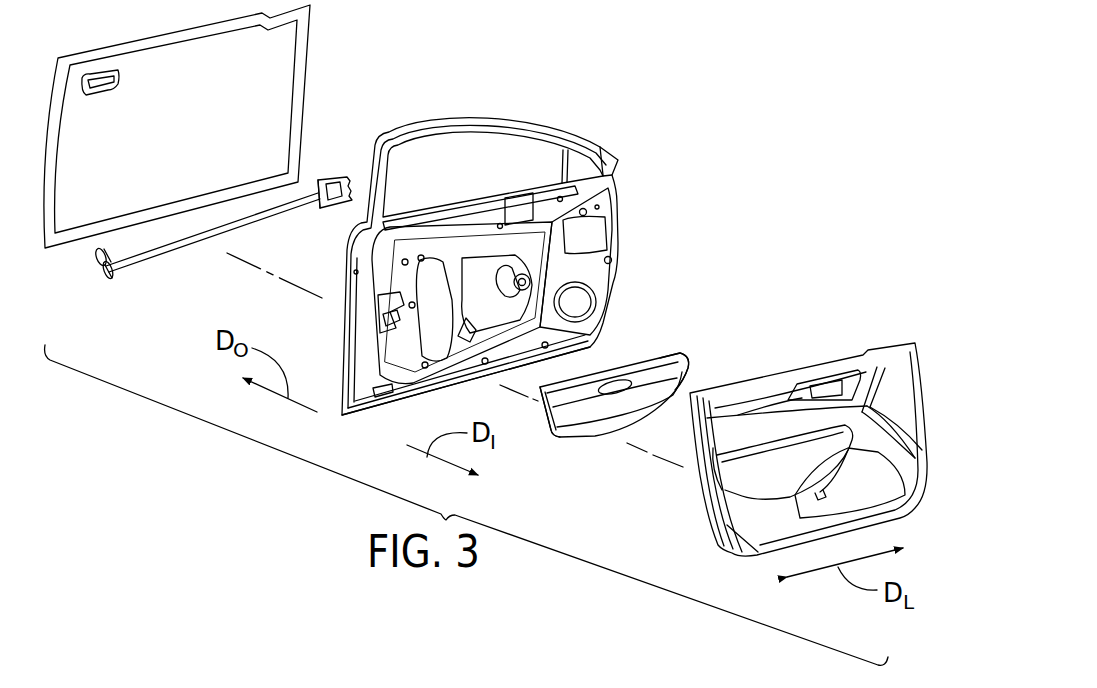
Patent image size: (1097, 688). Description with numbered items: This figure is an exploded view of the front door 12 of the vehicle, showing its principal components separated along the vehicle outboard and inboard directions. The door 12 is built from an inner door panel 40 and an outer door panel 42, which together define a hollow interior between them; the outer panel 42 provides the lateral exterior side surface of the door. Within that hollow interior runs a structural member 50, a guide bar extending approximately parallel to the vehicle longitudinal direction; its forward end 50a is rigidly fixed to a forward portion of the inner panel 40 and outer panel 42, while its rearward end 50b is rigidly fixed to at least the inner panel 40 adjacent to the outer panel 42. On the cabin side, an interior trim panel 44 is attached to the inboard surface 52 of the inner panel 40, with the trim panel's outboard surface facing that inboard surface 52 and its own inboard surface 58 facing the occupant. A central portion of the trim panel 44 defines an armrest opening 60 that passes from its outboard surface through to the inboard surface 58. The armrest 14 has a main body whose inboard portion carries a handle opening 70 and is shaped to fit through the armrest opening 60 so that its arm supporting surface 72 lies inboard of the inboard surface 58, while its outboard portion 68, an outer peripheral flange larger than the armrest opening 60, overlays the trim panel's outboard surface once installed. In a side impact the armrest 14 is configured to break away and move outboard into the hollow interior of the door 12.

The door 12 is at (683, 46).
The armrest 14 is at (588, 425).
The inner door panel 40 is at (607, 200).
The outer door panel 42 is at (300, 62).
The interior trim panel 44 is at (833, 357).
The structural member 50 is at (167, 247).
The forward end 50a is at (342, 175).
The rearward end 50b is at (102, 258).
The inboard surface 52 is at (578, 267).
The inboard surface 58 is at (883, 427).
The armrest opening 60 is at (717, 492).
The outboard portion 68 is at (543, 415).
The handle opening 70 is at (614, 378).
The arm supporting surface 72 is at (648, 372).